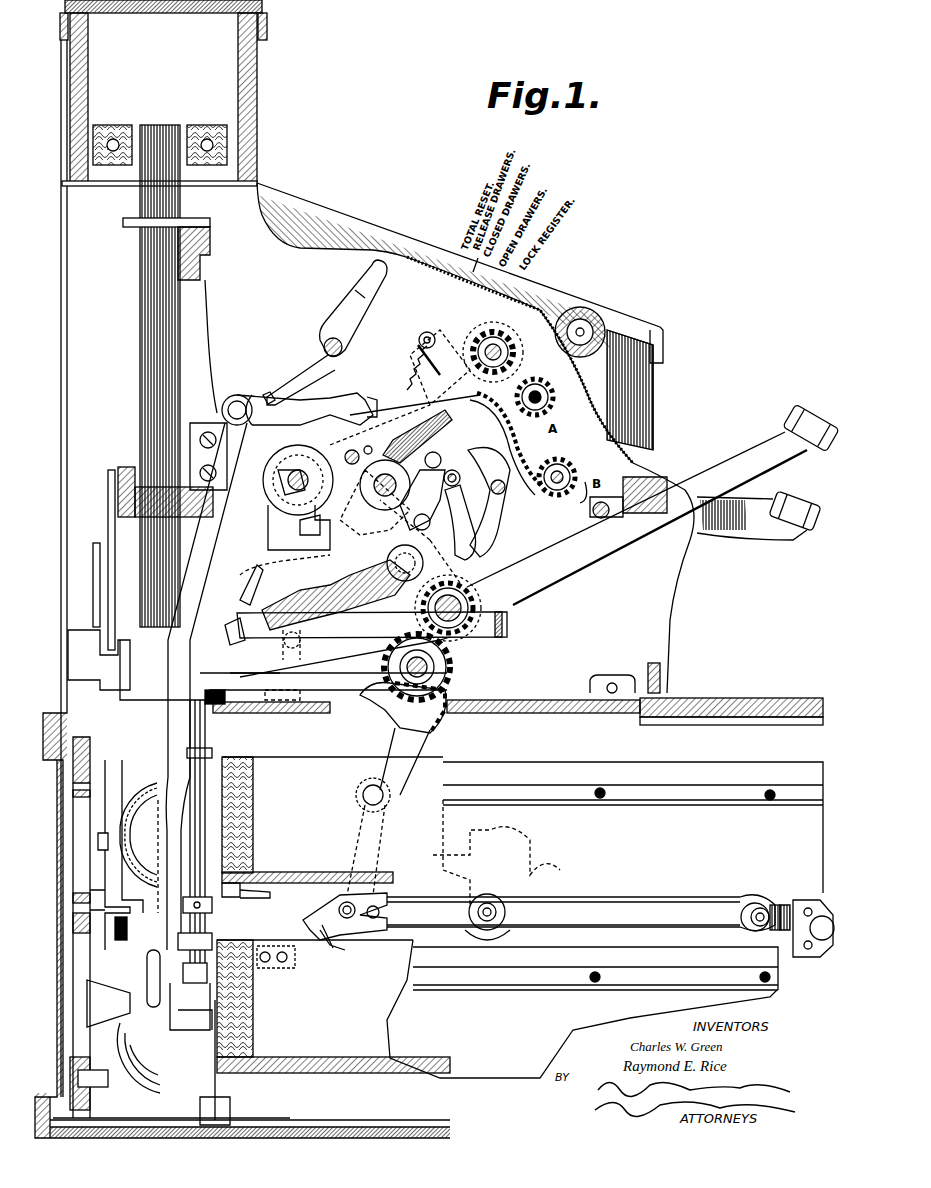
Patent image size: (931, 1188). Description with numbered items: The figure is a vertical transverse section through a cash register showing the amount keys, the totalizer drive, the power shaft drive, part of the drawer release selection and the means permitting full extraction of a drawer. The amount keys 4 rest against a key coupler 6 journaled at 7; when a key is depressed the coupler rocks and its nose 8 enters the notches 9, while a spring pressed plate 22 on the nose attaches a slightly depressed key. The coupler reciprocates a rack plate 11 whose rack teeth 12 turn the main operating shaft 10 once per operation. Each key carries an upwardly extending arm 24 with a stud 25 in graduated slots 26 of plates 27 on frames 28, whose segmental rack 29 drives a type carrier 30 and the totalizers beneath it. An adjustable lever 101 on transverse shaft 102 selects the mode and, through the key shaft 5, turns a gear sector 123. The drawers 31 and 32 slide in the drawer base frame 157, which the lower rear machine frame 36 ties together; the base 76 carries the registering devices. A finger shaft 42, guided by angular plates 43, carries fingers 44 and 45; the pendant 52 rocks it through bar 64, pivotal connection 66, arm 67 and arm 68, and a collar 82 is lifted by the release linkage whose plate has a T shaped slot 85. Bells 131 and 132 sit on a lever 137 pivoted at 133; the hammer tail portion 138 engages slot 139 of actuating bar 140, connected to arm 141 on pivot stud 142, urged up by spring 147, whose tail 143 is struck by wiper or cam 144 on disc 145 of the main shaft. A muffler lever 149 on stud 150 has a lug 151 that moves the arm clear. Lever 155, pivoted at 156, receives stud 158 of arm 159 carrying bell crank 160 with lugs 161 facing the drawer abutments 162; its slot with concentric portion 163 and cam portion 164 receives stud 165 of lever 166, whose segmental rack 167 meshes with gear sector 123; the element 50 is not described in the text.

The amount keys 4 is at (750, 515).
The key shaft 5 is at (500, 608).
The key coupler 6 is at (355, 578).
The key coupler journal 7 is at (398, 550).
The nose 8 is at (281, 665).
The notches 9 is at (228, 630).
The main operating shaft 10 is at (300, 470).
The rack plate 11 is at (285, 566).
The rack teeth 12 is at (299, 527).
The spring pressed plate 22 is at (250, 600).
The upwardly extending arm 24 is at (452, 515).
The stud 25 is at (470, 460).
The slots 26 is at (537, 518).
The plates 27 is at (505, 470).
The frames 28 is at (385, 510).
The segmental rack 29 is at (435, 345).
The type carrier 30 is at (480, 332).
The upper drawer 31 is at (253, 795).
The lower drawer 32 is at (253, 1003).
The lower rear machine frame 36 is at (79, 1001).
The finger shaft 42 is at (197, 862).
The angular plates 43 is at (190, 1030).
The finger 44 is at (212, 752).
The finger 45 is at (212, 940).
The block 50 is at (125, 467).
The pendant 52 is at (108, 530).
The bar 64 is at (93, 570).
The pivotal connection 66 is at (100, 835).
The arm 67 is at (102, 875).
The arm 68 is at (212, 908).
The base 76 is at (505, 703).
The collar 82 is at (222, 710).
The T shaped slot 85 is at (398, 667).
The adjustable lever 101 is at (440, 432).
The transverse shaft 102 is at (433, 456).
The gear sector 123 is at (452, 672).
The bell 131 is at (138, 835).
The bell 132 is at (150, 1055).
The pivot 133 is at (130, 928).
The lever 137 is at (148, 762).
The tail portion 138 is at (108, 1003).
The slot 139 is at (147, 960).
The actuating bar 140 is at (175, 734).
The arm 141 is at (305, 420).
The pivot stud 142 is at (352, 450).
The tail 143 is at (314, 529).
The wiper or cam 144 is at (372, 405).
The disc 145 is at (235, 520).
The spring 147 is at (498, 494).
The lever 149 is at (355, 315).
The stud 150 is at (324, 345).
The lug 151 is at (266, 395).
The lever 155 is at (581, 913).
The pivot 156 is at (520, 892).
The drawer base frame 157 is at (470, 840).
The stud 158 is at (765, 910).
The arm 159 is at (770, 912).
The bell crank 160 is at (810, 955).
The lugs 161 is at (785, 935).
The lugs or abutments 162 is at (245, 935).
The concentric portion 163 is at (375, 920).
The cam portion 164 is at (330, 948).
The stud 165 is at (347, 920).
The lever 166 is at (362, 830).
The segmental rack 167 is at (395, 703).